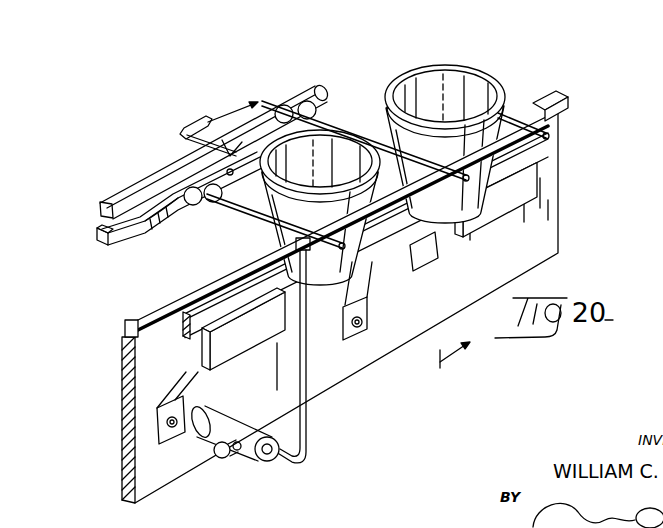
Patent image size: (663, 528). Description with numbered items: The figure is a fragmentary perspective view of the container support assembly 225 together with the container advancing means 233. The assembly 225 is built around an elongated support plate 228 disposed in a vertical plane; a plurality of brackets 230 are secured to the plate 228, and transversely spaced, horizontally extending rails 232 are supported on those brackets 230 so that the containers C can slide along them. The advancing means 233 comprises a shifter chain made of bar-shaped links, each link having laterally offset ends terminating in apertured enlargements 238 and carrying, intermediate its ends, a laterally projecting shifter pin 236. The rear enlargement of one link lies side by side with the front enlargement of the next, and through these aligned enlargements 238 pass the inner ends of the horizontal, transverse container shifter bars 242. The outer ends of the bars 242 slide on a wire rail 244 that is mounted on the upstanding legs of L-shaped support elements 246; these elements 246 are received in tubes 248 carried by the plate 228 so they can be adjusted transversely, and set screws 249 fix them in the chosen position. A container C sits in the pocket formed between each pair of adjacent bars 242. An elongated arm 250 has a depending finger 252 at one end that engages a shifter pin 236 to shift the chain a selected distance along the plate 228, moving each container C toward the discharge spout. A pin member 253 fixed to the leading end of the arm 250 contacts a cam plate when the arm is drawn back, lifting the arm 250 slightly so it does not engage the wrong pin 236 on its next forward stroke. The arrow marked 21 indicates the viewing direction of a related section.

The section line 21 is at (340, 236).
The container support assembly 225 is at (115, 392).
The support plate 228 is at (123, 448).
The brackets 230 is at (190, 370).
The rails 232 is at (528, 186).
The container advancing means 233 is at (163, 234).
The shifter pin 236 is at (97, 243).
The apertured enlargements 238 is at (287, 106).
The container shifter bars 242 is at (549, 136).
The wire rail 244 is at (546, 103).
The L-shaped support elements 246 is at (312, 438).
The tubes 248 is at (202, 426).
The set screws 249 is at (228, 460).
The arm 250 is at (100, 211).
The depending finger 252 is at (229, 172).
The pin member 253 is at (183, 135).
The container C is at (333, 142).